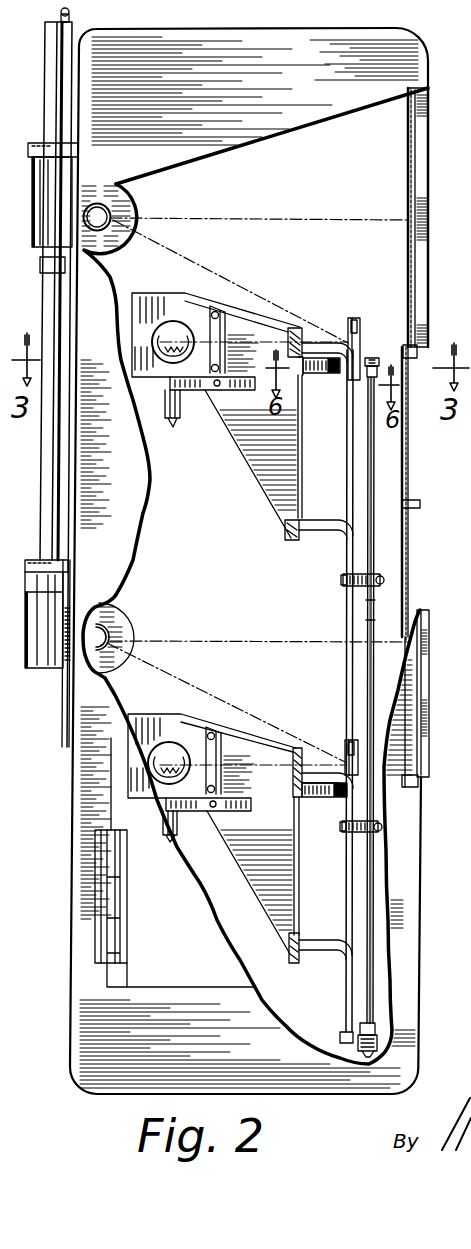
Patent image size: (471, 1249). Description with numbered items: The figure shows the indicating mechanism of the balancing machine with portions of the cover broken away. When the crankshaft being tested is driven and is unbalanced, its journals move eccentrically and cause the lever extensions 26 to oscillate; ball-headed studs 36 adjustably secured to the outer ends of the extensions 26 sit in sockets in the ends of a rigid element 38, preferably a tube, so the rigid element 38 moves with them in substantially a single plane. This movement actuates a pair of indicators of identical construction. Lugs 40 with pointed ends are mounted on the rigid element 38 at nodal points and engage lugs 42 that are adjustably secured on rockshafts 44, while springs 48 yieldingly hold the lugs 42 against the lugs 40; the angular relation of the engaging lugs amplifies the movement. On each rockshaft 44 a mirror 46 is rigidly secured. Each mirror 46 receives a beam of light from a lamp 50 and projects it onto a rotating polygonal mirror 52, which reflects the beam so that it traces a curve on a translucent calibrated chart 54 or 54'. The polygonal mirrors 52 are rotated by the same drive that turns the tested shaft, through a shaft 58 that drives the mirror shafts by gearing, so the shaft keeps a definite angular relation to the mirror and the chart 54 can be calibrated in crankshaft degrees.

The extensions 26 is at (373, 358).
The ball-headed studs 36 is at (368, 392).
The rigid element 38 is at (376, 594).
The lugs 40 is at (377, 573).
The lugs 42 is at (346, 585).
The rockshafts 44 is at (351, 473).
The mirror 46 is at (348, 343).
The springs 48 is at (337, 373).
The lamp 50 is at (160, 333).
The rotating polygonal mirror 52 is at (97, 203).
The translucent calibrated chart 54 is at (434, 567).
The translucent calibrated chart 54' is at (433, 223).
The shaft 58 is at (70, 14).